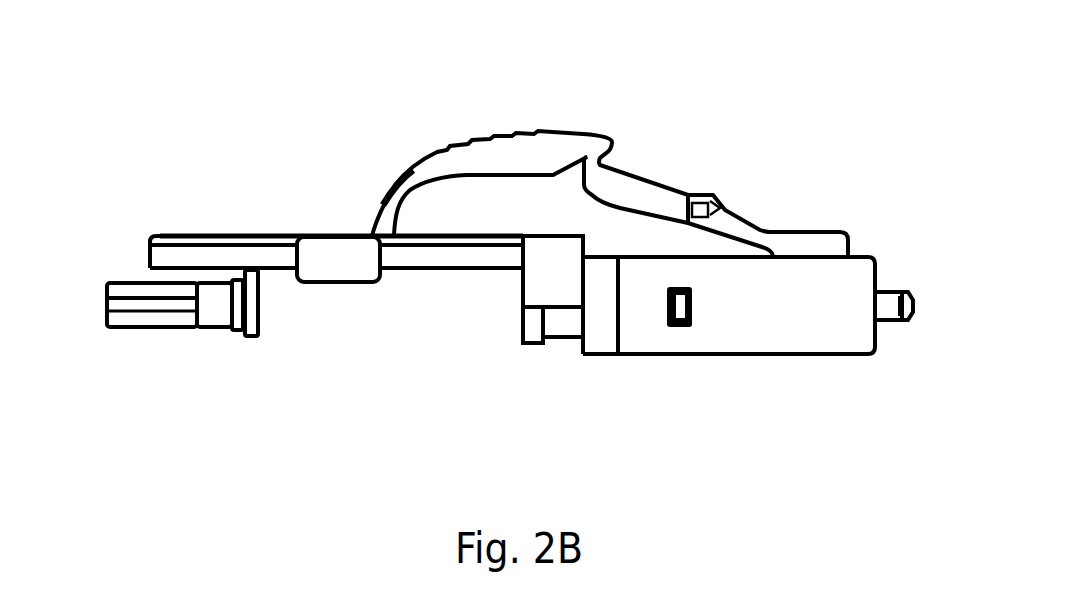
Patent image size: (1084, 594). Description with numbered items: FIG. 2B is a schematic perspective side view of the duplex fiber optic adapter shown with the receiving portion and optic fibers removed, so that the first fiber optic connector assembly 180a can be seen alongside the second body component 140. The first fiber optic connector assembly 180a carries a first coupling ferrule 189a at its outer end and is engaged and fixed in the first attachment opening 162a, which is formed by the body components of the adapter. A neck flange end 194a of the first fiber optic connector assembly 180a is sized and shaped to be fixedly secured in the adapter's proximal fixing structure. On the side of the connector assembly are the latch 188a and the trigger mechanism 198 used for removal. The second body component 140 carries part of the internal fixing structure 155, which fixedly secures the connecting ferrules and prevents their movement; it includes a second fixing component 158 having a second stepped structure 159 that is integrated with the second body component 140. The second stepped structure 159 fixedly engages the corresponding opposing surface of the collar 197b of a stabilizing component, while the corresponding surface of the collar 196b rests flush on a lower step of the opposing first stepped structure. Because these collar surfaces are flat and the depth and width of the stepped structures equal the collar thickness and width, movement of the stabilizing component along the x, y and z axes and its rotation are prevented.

The second body component 140 is at (230, 238).
The first attachment opening 162a is at (500, 289).
The trigger mechanism 198 is at (547, 134).
The second stepped structure 159 is at (234, 290).
The neck flange end 194a is at (518, 331).
The corresponding surface of the collar 196b is at (193, 328).
The corresponding opposing surface of the collar 197b is at (232, 333).
The second fixing component 158 is at (262, 335).
The internal fixing structure 155 is at (274, 321).
The latch 188a is at (690, 224).
The first fiber optic connector assembly 180a is at (783, 352).
The first coupling ferrule 189a is at (913, 303).